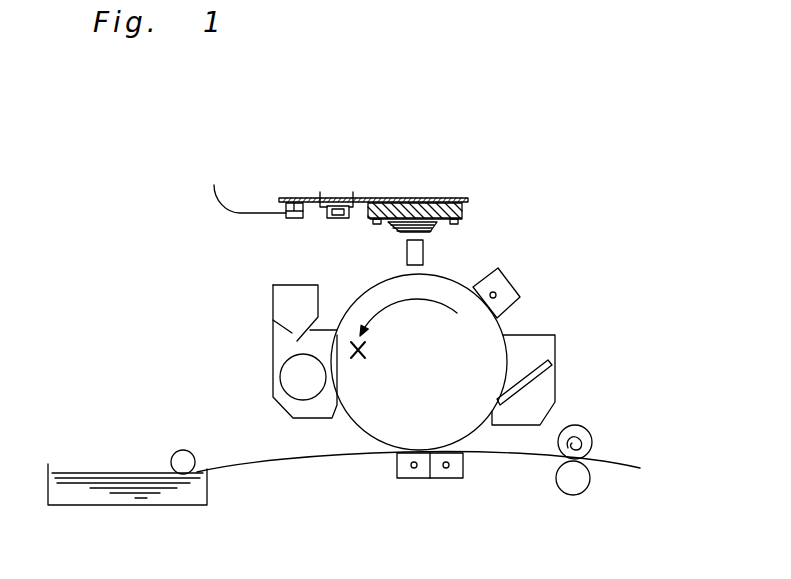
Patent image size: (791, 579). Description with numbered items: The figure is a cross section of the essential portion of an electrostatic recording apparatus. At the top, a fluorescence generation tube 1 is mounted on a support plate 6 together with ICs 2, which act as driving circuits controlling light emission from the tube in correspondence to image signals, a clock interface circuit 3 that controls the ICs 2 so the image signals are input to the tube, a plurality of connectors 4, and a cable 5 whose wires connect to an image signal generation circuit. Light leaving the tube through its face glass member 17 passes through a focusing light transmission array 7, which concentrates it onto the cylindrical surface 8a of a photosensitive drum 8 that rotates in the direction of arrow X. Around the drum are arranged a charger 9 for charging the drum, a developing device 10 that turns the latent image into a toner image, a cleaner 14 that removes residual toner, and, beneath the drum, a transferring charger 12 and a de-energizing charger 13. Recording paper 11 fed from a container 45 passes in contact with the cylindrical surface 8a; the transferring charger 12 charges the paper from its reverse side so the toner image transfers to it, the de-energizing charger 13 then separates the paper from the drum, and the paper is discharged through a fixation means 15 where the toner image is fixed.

The fluorescence generation tube 1 is at (432, 208).
The ICs 2 is at (383, 210).
The clock interface circuit 3 is at (333, 208).
The connectors 4 is at (297, 208).
The cable 5 is at (214, 185).
The support plate 6 is at (407, 202).
The focusing light transmission array 7 is at (415, 257).
The photosensitive drum 8 is at (443, 293).
The cylindrical surface 8a is at (497, 322).
The charger 9 is at (510, 279).
The developing device 10 is at (273, 352).
The recording paper 11 is at (268, 456).
The transferring charger 12 is at (413, 478).
The de-energizing charger 13 is at (447, 478).
The cleaner 14 is at (557, 352).
The fixation means 15 is at (593, 430).
The face glass member 17 is at (398, 227).
The container 45 is at (125, 505).